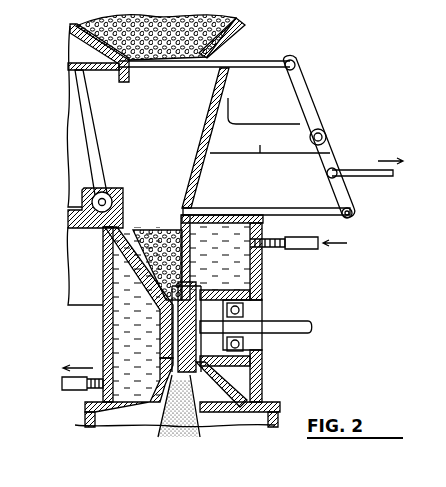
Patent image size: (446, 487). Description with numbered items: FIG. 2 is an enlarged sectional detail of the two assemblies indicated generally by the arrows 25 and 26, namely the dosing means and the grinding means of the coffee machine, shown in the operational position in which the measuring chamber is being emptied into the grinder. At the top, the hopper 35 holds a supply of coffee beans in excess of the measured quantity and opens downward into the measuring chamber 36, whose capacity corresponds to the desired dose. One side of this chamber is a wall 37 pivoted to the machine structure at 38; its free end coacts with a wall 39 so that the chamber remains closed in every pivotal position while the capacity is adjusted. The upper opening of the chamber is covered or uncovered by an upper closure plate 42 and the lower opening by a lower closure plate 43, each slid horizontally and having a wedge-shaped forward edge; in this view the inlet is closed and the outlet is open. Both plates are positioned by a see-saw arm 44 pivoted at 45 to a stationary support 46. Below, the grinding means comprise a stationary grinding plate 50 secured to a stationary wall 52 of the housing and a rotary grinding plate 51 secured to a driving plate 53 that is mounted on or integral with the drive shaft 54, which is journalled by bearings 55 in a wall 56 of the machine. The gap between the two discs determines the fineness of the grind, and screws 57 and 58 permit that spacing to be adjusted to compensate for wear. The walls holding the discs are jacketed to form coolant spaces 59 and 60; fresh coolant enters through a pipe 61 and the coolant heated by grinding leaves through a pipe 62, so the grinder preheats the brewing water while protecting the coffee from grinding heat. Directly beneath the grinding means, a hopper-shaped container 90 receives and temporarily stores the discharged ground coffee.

The mixing unit 25 is at (76, 148).
The spray head housing 26 is at (346, 278).
The hopper 35 is at (230, 45).
The measuring chamber 36 is at (222, 90).
The wall 37 is at (97, 127).
The pivot 38 is at (108, 200).
The wall 39 is at (80, 63).
The upper closure plate 42 is at (275, 63).
The lower closure plate 43 is at (296, 211).
The see-saw arm 44 is at (304, 92).
The pivot 45 is at (328, 136).
The stationary support 46 is at (260, 150).
The stationary grinding plate 50 is at (165, 400).
The rotary grinding plate 51 is at (193, 405).
The stationary wall 52 is at (135, 400).
The driving plate 53 is at (218, 292).
The drive shaft 54 is at (302, 321).
The bearings 55 is at (244, 348).
The wall 56 is at (262, 390).
The screw 57 is at (166, 330).
The screw 58 is at (224, 385).
The coolant space 59 is at (120, 268).
The coolant space 60 is at (252, 233).
The pipe 61 is at (290, 249).
The pipe 62 is at (74, 392).
The container 90 is at (89, 420).